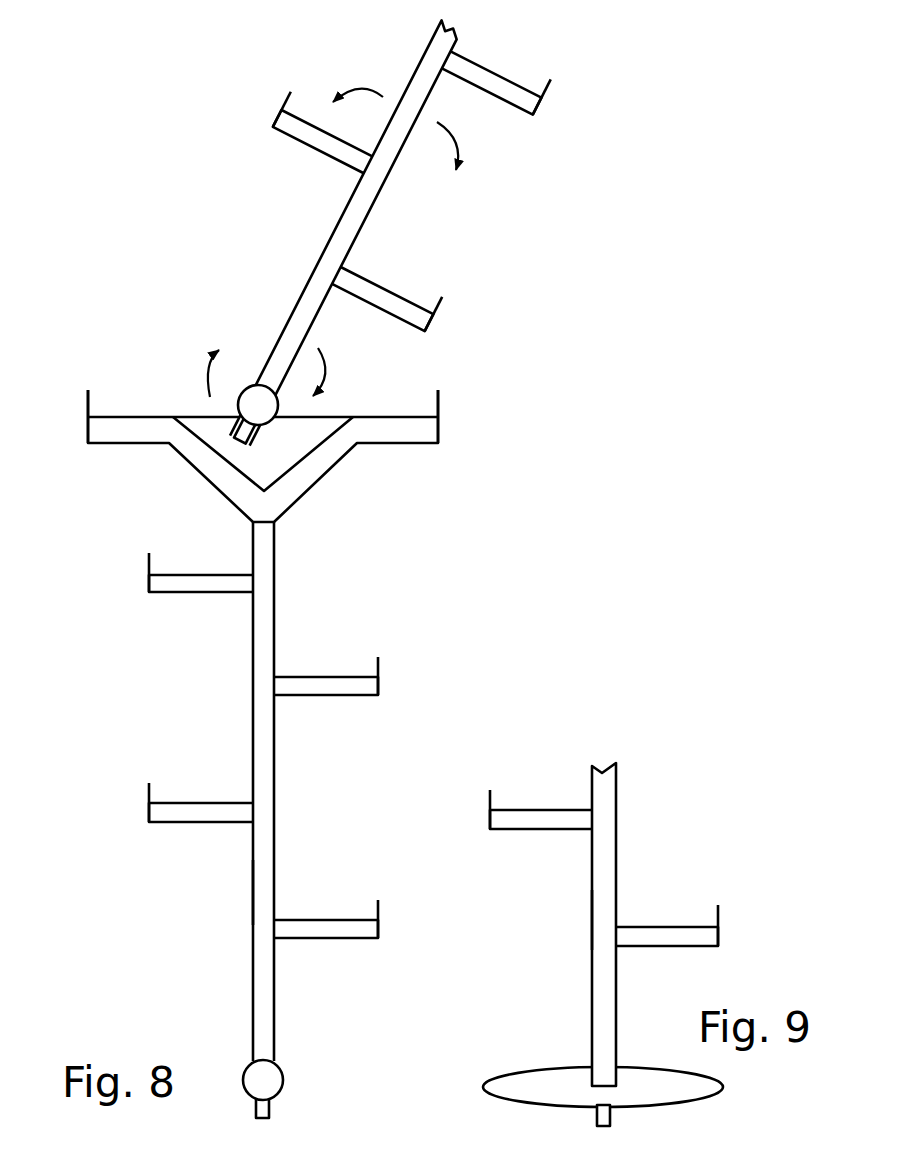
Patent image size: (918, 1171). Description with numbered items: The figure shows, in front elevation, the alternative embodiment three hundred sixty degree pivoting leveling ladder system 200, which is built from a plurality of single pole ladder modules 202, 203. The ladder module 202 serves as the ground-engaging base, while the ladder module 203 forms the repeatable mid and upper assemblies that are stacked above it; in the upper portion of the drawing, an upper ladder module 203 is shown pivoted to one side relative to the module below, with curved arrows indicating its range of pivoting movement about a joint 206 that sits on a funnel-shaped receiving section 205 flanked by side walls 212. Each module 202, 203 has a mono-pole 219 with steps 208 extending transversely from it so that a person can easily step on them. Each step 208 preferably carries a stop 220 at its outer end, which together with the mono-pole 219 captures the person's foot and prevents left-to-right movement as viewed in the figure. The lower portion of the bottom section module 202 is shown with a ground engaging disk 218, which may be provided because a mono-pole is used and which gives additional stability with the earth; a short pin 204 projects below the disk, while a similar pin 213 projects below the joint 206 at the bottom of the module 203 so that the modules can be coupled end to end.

In FIG. 8, the 360 degree pivoting leveling ladder system 200 is at (185, 200).
In FIG. 9, the single pole ladder module 202 is at (623, 848).
In FIG. 8, the single pole ladder module 203 is at (424, 56).
In FIG. 9, the pin 204 is at (597, 1123).
In FIG. 8, the funnel base 205 is at (385, 432).
In FIG. 8, the ball joint 206 is at (256, 400).
In FIG. 8, the step 208 is at (403, 300).
In FIG. 9, the step 208 is at (570, 822).
In FIG. 8, the side wall 212 is at (88, 400).
In FIG. 8, the pin 213 is at (273, 1112).
In FIG. 9, the ground engaging disk 218 is at (543, 1075).
In FIG. 8, the mono-pole 219 is at (258, 890).
In FIG. 9, the mono-pole 219 is at (598, 915).
In FIG. 8, the stop 220 is at (150, 577).